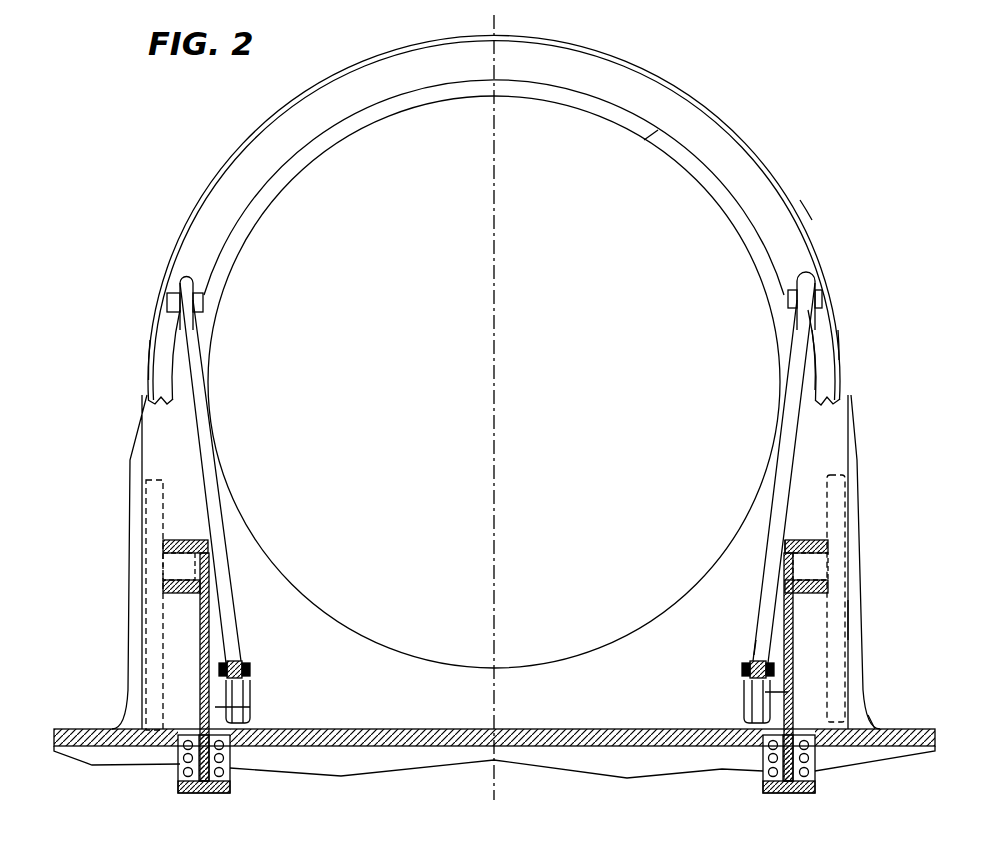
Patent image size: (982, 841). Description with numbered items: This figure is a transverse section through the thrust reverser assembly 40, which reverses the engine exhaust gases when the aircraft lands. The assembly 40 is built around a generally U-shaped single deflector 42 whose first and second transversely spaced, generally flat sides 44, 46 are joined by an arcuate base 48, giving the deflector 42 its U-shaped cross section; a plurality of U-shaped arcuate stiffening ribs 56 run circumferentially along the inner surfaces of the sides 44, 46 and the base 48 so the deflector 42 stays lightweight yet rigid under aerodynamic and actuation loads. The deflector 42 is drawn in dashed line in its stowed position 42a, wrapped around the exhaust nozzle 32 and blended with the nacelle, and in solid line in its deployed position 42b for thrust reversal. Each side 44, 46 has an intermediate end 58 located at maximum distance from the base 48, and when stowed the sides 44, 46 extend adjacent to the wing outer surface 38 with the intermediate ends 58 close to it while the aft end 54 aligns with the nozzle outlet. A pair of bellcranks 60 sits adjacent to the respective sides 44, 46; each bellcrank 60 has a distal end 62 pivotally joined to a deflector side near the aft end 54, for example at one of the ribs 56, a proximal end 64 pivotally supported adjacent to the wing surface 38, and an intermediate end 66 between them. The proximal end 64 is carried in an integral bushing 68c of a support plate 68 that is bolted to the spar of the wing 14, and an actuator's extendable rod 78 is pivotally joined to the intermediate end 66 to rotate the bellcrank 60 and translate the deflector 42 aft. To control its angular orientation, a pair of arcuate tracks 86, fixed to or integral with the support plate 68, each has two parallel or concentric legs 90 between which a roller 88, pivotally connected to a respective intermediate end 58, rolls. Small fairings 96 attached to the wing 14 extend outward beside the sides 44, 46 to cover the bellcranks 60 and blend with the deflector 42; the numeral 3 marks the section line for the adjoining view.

The section line 3- 3 is at (494, 800).
The wing 14 is at (652, 790).
The exhaust nozzle 32 is at (696, 178).
The wing outer surface 38 is at (922, 728).
The thrust reverser assembly 40 is at (853, 340).
The deflector 42 is at (788, 178).
The stowed position of deflector 42a is at (810, 229).
The deployed position of deflector 42b is at (848, 625).
The first side 44 is at (152, 357).
The second side 46 is at (832, 373).
The base 48 is at (577, 46).
The aft end 54 is at (875, 720).
The stiffening ribs 56 is at (648, 136).
The intermediate end 58 is at (850, 549).
The bellcranks 60 is at (228, 498).
The distal end 62 is at (788, 297).
The proximal end 64 is at (743, 700).
The intermediate end 66 is at (741, 662).
The support plate 68 is at (842, 777).
The bushing 68c is at (242, 707).
The extendable rod 78 is at (752, 650).
The tracks 86 is at (802, 520).
The rollers 88 is at (830, 565).
The legs 90 is at (814, 537).
The fairings 96 is at (857, 438).